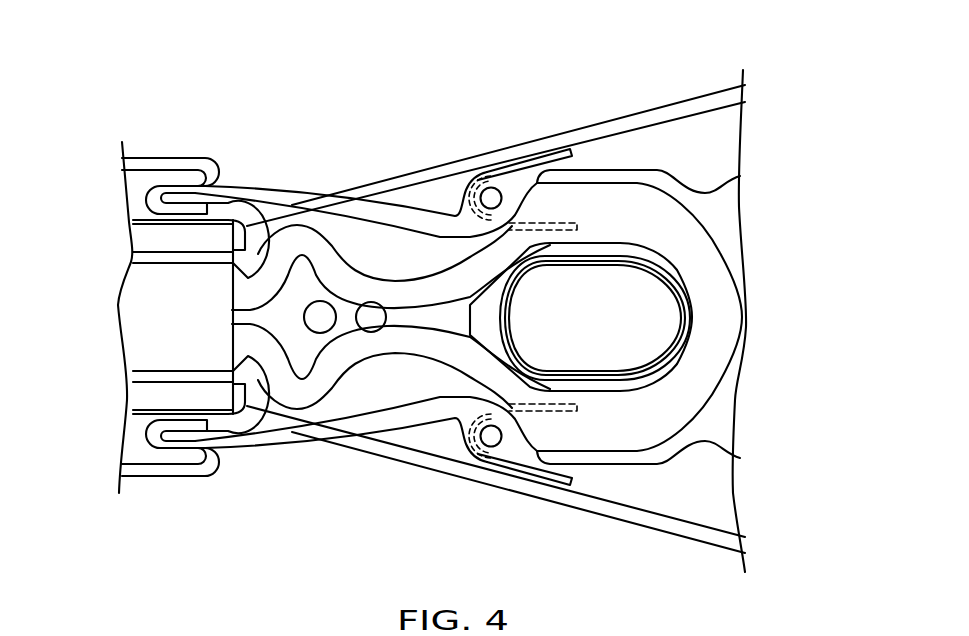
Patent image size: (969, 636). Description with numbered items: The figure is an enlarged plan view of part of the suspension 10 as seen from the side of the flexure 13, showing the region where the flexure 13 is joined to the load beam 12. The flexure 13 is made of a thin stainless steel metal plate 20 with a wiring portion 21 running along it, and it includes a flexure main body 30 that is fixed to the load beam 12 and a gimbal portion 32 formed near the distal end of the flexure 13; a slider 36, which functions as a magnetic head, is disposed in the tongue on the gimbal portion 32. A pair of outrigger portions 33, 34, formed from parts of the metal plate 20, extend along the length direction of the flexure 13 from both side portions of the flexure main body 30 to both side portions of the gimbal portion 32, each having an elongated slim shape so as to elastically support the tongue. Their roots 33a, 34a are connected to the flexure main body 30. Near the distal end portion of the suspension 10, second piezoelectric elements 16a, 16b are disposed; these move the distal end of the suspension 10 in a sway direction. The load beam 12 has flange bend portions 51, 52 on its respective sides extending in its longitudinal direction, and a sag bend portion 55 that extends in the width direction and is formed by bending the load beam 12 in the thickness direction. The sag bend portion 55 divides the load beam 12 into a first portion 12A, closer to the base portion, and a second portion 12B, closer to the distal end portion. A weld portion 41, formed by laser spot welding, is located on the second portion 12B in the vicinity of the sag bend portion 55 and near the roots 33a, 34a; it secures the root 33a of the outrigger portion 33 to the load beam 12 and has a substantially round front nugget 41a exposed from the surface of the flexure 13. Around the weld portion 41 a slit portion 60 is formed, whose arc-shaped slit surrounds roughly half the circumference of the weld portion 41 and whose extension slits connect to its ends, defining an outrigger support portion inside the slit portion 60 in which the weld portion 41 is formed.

The suspension 10 is at (288, 114).
The load beam 12 is at (736, 492).
The first portion 12A is at (720, 137).
The second portion 12B is at (427, 179).
The flexure 13 is at (652, 172).
The second piezoelectric element 16a is at (148, 239).
The second piezoelectric element 16b is at (137, 398).
The metal plate 20 is at (727, 207).
The wiring portion 21 is at (737, 327).
The flexure main body 30 is at (605, 167).
The gimbal portion 32 is at (178, 216).
The outrigger portion 33 is at (370, 205).
The root of outrigger portion 33a is at (494, 196).
The outrigger portion 34 is at (375, 428).
The root of outrigger portion 34a is at (493, 442).
The slider 36 is at (130, 315).
The weld portion 41 is at (465, 165).
The front nugget 41a is at (497, 177).
The flange bend portion 51 is at (645, 110).
The flange bend portion 52 is at (603, 517).
The sag bend portion 55 is at (560, 129).
The slit portion 60 is at (543, 152).